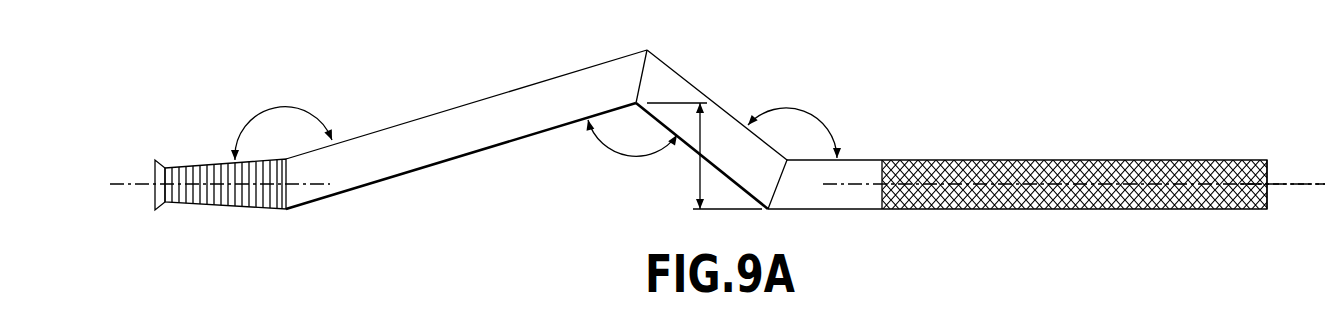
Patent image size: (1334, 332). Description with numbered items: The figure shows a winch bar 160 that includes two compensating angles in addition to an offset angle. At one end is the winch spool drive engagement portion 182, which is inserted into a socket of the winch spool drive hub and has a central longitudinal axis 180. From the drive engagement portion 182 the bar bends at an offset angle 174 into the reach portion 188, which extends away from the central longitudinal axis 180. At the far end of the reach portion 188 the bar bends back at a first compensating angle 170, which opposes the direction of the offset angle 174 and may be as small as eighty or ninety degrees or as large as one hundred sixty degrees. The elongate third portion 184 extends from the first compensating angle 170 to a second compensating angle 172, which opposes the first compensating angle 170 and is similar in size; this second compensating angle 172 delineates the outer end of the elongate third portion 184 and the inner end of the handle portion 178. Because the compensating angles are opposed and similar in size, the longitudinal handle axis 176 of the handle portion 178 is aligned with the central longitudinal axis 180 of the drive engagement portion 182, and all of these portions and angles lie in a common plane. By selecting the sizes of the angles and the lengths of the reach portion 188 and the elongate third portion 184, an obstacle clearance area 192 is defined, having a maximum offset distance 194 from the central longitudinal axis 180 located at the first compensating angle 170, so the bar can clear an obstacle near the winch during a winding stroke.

The winch bar 160 is at (1027, 158).
The first compensating angle 170 is at (624, 164).
The second compensating angle 172 is at (808, 111).
The offset angle 174 is at (286, 109).
The longitudinal handle axis 176 is at (1292, 180).
The handle portion 178 is at (1215, 158).
The central longitudinal axis 180 is at (142, 182).
The winch spool drive engagement portion 182 is at (217, 211).
The elongate third portion 184 is at (695, 86).
The reach portion 188 is at (458, 104).
The obstacle clearance area 192 is at (633, 120).
The maximum offset distance 194 is at (697, 179).